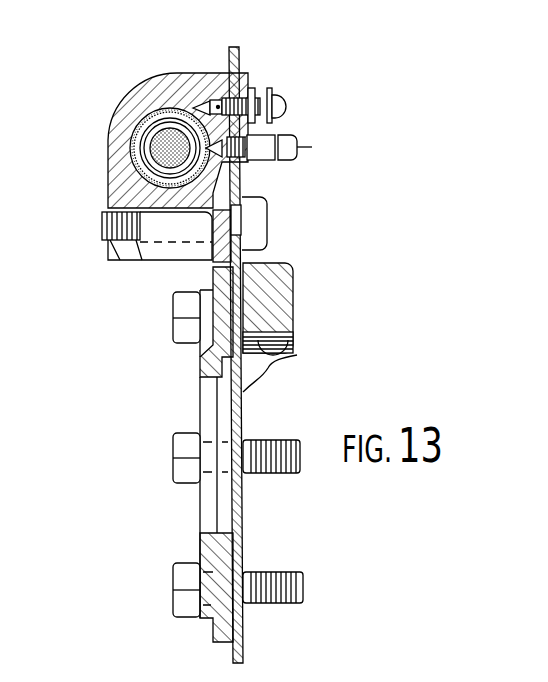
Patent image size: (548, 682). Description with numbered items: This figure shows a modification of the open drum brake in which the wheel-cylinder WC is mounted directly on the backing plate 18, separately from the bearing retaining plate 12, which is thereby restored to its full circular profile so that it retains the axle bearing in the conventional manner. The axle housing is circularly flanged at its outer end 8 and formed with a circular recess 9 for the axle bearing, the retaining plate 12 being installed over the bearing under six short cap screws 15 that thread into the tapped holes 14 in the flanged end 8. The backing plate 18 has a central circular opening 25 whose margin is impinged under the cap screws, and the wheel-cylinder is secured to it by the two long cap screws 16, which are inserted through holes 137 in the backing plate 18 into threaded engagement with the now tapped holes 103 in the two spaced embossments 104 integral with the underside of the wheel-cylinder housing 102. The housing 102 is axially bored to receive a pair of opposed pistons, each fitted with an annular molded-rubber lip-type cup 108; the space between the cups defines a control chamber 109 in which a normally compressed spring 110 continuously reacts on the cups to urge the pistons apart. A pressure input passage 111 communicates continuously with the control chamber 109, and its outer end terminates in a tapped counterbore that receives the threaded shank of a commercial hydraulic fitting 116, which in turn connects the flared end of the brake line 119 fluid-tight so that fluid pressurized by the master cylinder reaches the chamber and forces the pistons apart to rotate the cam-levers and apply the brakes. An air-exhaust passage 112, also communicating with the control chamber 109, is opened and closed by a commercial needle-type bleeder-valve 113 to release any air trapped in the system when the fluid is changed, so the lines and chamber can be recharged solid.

The wheel-cylinder WC is at (127, 87).
The flanged outer end of axle housing 8 is at (293, 278).
The circular recess 9 is at (283, 359).
The retaining plate 12 is at (200, 367).
The tapped holes 14 is at (293, 326).
The short screws 15 is at (173, 312).
The long screws 16 is at (258, 233).
The backing plate 18 is at (252, 510).
The circular opening 25 is at (240, 412).
The wheel-cylinder housing 102 is at (122, 132).
The tapped holes 103 is at (113, 259).
The embossments 104 is at (157, 253).
The lip-type cup 108 is at (155, 147).
The compressed spring 110 is at (146, 168).
The control chamber 109 is at (143, 188).
The pressure input passage 111 is at (242, 168).
The air-exhaust passage 112 is at (182, 102).
The bleeder-valve 113 is at (259, 76).
The hydraulic fitting 116 is at (288, 122).
The brake line 119 is at (316, 146).
The holes 137 is at (240, 218).